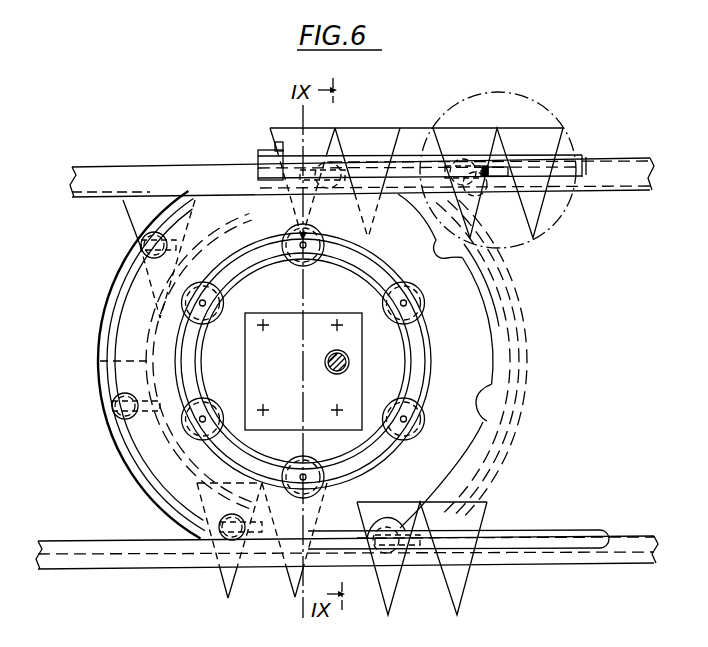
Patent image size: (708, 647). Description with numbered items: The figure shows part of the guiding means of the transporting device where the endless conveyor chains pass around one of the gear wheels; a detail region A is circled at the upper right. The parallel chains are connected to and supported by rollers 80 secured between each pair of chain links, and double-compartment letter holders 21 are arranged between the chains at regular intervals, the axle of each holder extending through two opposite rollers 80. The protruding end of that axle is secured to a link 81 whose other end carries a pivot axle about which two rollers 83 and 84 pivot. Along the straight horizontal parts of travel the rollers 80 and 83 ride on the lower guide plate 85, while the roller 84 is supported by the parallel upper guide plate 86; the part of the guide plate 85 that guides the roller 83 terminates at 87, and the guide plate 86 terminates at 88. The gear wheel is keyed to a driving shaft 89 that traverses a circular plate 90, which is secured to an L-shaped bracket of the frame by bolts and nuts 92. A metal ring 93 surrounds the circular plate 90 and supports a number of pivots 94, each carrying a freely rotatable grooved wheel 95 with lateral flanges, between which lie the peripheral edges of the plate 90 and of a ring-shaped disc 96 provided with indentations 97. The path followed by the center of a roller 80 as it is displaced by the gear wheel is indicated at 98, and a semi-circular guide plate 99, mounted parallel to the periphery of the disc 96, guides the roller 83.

The double-compartment letter holder 21 is at (465, 160).
The roller 80 is at (530, 195).
The link 81 is at (500, 165).
The roller 83 is at (455, 192).
The roller 84 is at (468, 188).
The lower guide plate 85 is at (610, 191).
The upper guide plate 86 is at (398, 175).
The termination of guide plate part 87 is at (307, 194).
The termination of upper guide plate 88 is at (262, 151).
The driving shaft 89 is at (349, 363).
The circular plate 90 is at (402, 339).
The bolts and nuts 92 is at (264, 327).
The metal ring 93 is at (364, 463).
The pivot 94 is at (405, 302).
The grooved wheel 95 is at (410, 419).
The ring-shaped disc 96 is at (471, 461).
The indentation 97 is at (472, 403).
The path of roller center 98 is at (502, 358).
The semi-circular guide plate 99 is at (96, 319).
The detail circle A is at (553, 125).